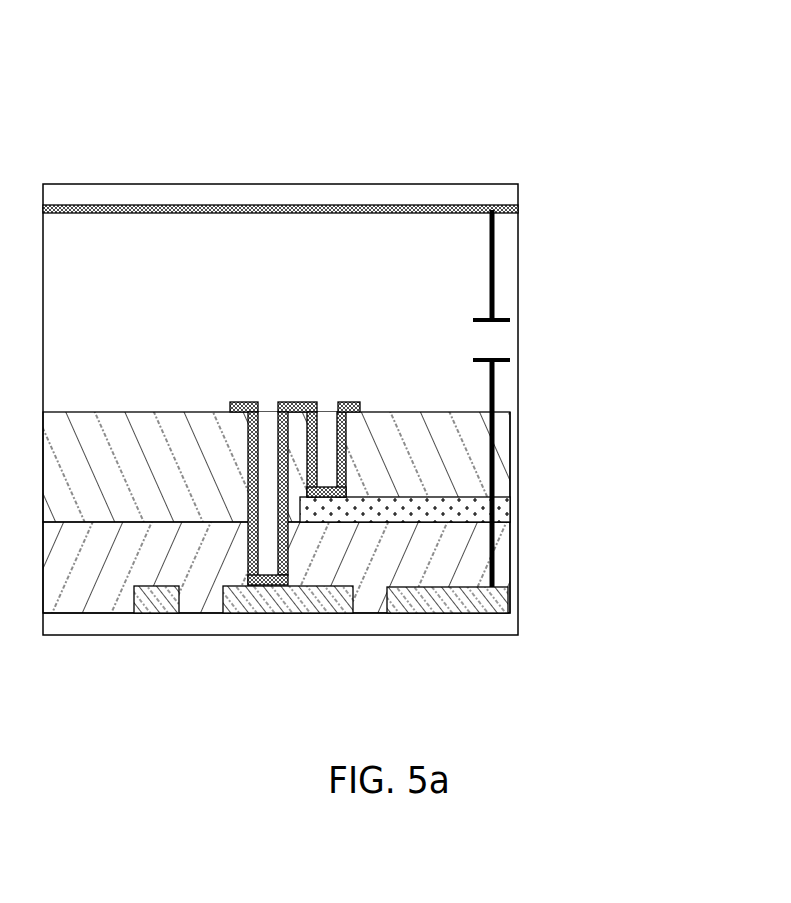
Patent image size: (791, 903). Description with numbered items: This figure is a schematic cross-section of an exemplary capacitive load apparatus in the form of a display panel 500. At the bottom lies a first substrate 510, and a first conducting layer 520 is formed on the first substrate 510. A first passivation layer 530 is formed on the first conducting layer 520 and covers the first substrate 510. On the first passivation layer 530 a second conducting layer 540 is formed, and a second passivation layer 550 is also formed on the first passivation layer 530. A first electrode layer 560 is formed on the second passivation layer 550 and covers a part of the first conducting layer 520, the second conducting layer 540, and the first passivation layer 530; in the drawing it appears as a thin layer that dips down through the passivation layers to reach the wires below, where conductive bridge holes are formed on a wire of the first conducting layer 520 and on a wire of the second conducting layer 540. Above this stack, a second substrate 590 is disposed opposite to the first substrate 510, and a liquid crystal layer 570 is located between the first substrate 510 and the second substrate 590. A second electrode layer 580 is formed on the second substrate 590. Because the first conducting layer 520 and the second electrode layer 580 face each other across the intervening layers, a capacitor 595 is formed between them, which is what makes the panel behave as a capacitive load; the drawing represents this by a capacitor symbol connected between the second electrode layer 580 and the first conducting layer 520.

The display panel 500 is at (124, 110).
The first substrate 510 is at (479, 625).
The first conducting layer 520 is at (503, 600).
The first passivation layer 530 is at (505, 556).
The second conducting layer 540 is at (505, 508).
The second passivation layer 550 is at (505, 452).
The first electrode layer 560 is at (360, 403).
The liquid crystal layer 570 is at (505, 278).
The second electrode layer 580 is at (510, 207).
The second substrate 590 is at (495, 196).
The capacitor 595 is at (511, 357).